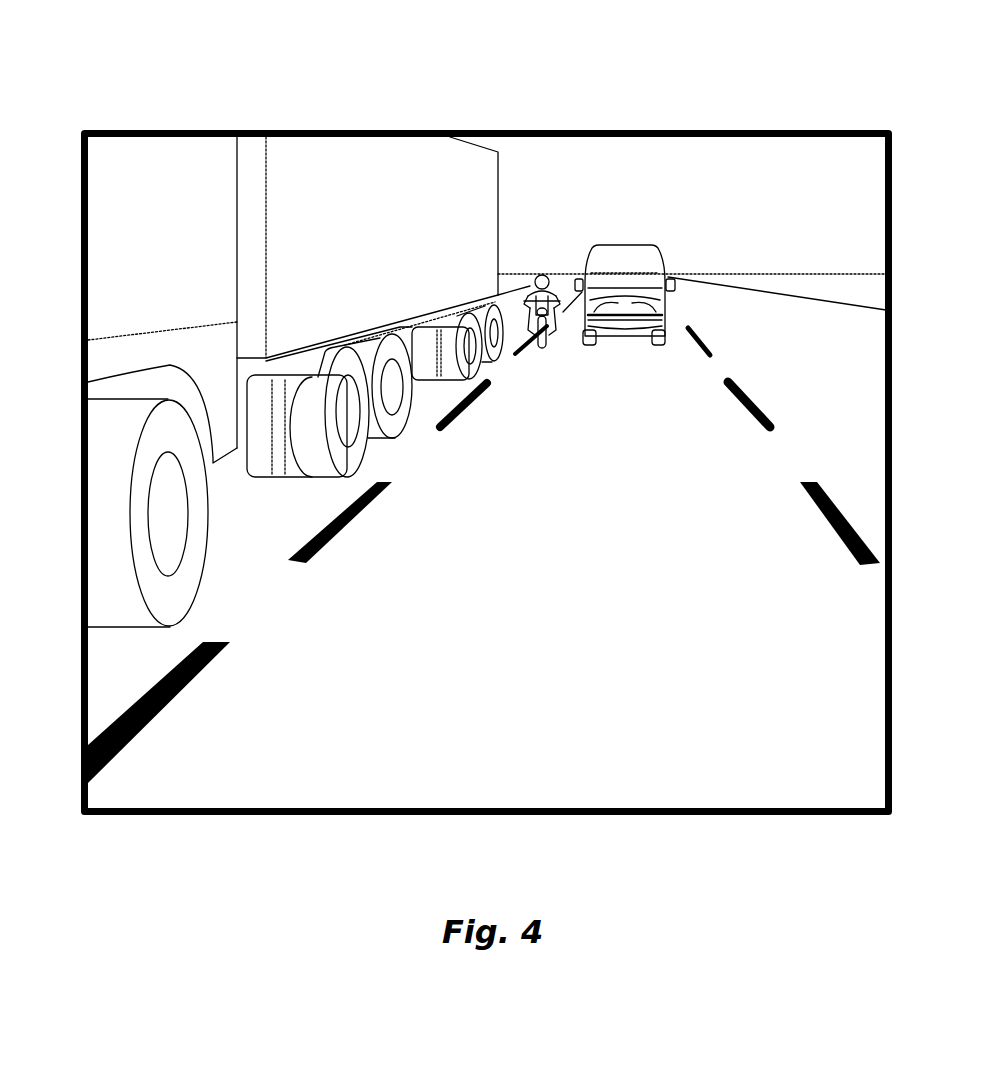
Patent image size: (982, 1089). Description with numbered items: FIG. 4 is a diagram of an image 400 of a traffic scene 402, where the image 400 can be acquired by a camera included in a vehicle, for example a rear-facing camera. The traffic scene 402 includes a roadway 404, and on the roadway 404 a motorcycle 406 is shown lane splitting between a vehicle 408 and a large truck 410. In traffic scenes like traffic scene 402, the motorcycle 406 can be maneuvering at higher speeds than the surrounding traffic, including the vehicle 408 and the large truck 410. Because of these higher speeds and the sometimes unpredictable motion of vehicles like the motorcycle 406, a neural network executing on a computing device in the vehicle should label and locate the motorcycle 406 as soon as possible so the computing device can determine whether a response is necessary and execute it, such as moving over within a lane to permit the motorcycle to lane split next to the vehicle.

The image 400 is at (512, 130).
The traffic scene 402 is at (452, 725).
The roadway 404 is at (575, 768).
The motorcycle 406 is at (547, 273).
The vehicle 408 is at (628, 245).
The large truck 410 is at (123, 235).